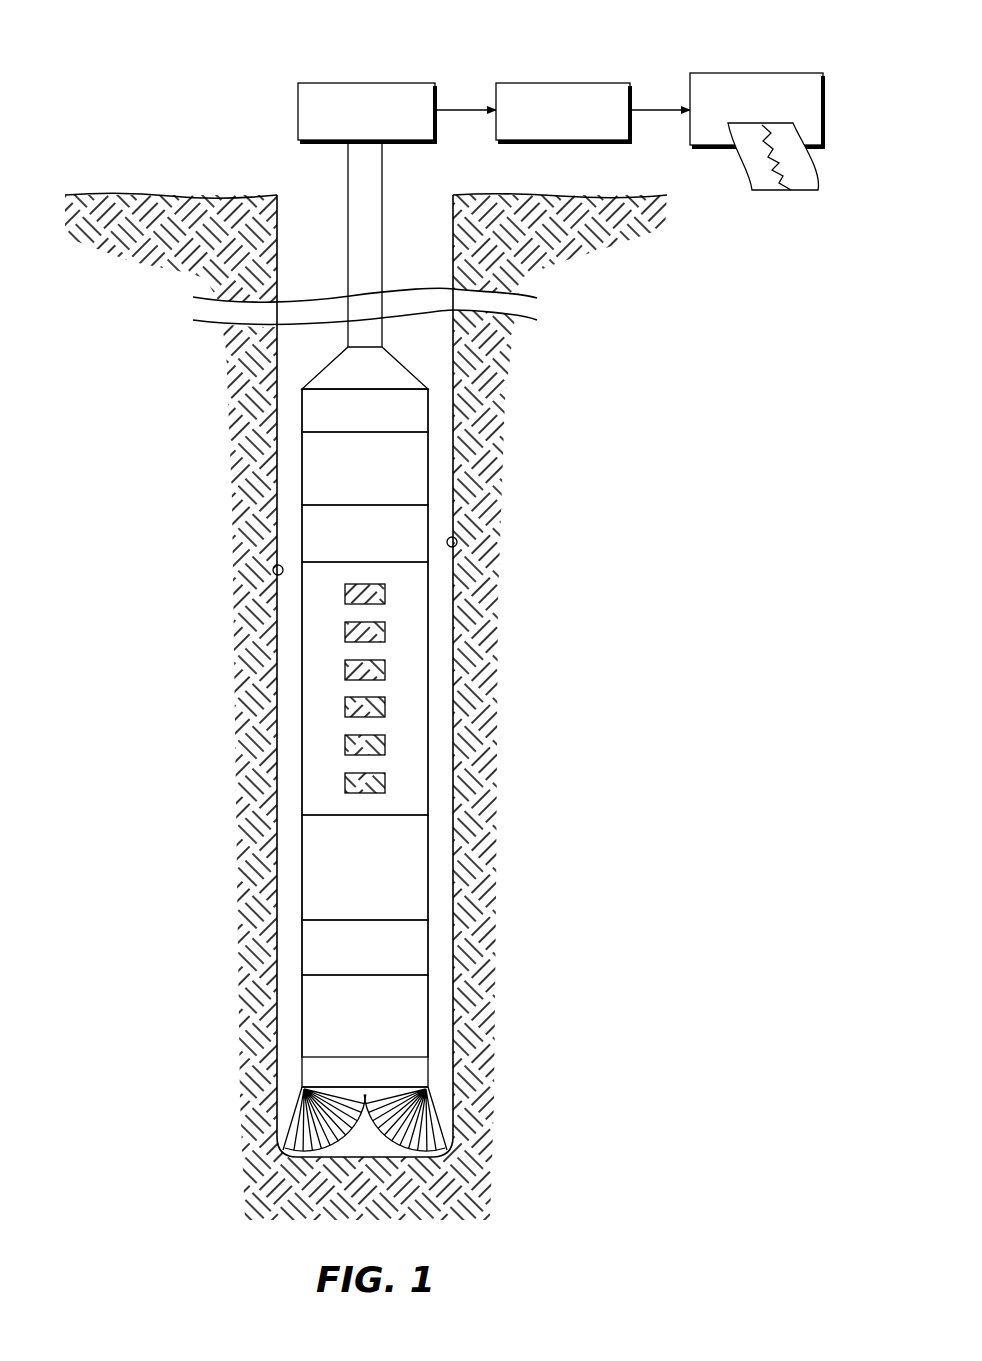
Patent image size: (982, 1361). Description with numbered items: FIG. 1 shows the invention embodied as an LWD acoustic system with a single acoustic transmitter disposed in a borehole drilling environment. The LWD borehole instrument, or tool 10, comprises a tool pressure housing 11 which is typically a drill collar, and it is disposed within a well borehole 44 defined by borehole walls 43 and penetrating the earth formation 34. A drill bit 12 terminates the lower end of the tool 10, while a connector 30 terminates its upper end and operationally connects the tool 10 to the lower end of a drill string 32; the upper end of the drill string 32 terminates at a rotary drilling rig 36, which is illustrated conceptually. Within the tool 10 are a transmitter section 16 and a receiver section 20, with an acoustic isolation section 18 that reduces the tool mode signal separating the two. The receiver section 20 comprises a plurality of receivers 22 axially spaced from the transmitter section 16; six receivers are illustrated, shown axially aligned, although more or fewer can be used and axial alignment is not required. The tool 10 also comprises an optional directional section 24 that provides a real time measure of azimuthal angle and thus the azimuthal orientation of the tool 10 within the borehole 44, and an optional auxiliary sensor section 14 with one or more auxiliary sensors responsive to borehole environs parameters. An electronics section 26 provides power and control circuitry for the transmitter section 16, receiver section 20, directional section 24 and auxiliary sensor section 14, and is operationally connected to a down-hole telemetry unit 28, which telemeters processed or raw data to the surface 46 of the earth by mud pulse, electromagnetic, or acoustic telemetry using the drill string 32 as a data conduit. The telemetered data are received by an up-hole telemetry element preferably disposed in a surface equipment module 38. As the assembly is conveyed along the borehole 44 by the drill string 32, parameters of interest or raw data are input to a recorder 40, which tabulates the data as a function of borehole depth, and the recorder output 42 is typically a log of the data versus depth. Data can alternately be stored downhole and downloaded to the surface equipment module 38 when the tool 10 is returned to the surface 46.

The tool 10 is at (297, 620).
The tool pressure housing 11 is at (302, 948).
The drill bit 12 is at (290, 1115).
The auxiliary sensor section 14 is at (302, 1015).
The transmitter section 16 is at (415, 948).
The acoustic isolation section 18 is at (302, 868).
The receiver section 20 is at (302, 672).
The receivers 22 is at (386, 633).
The directional section 24 is at (302, 534).
The electronics section 26 is at (302, 470).
The down-hole telemetry unit 28 is at (302, 411).
The connector 30 is at (402, 363).
The drill string 32 is at (348, 185).
The earth formation 34 is at (236, 244).
The rotary drilling rig 36 is at (392, 83).
The surface equipment module 38 is at (587, 83).
The recorder 40 is at (778, 73).
The recorder output 42 is at (770, 193).
The borehole walls 43 is at (274, 572).
The well borehole 44 is at (308, 342).
The surface 46 is at (165, 195).